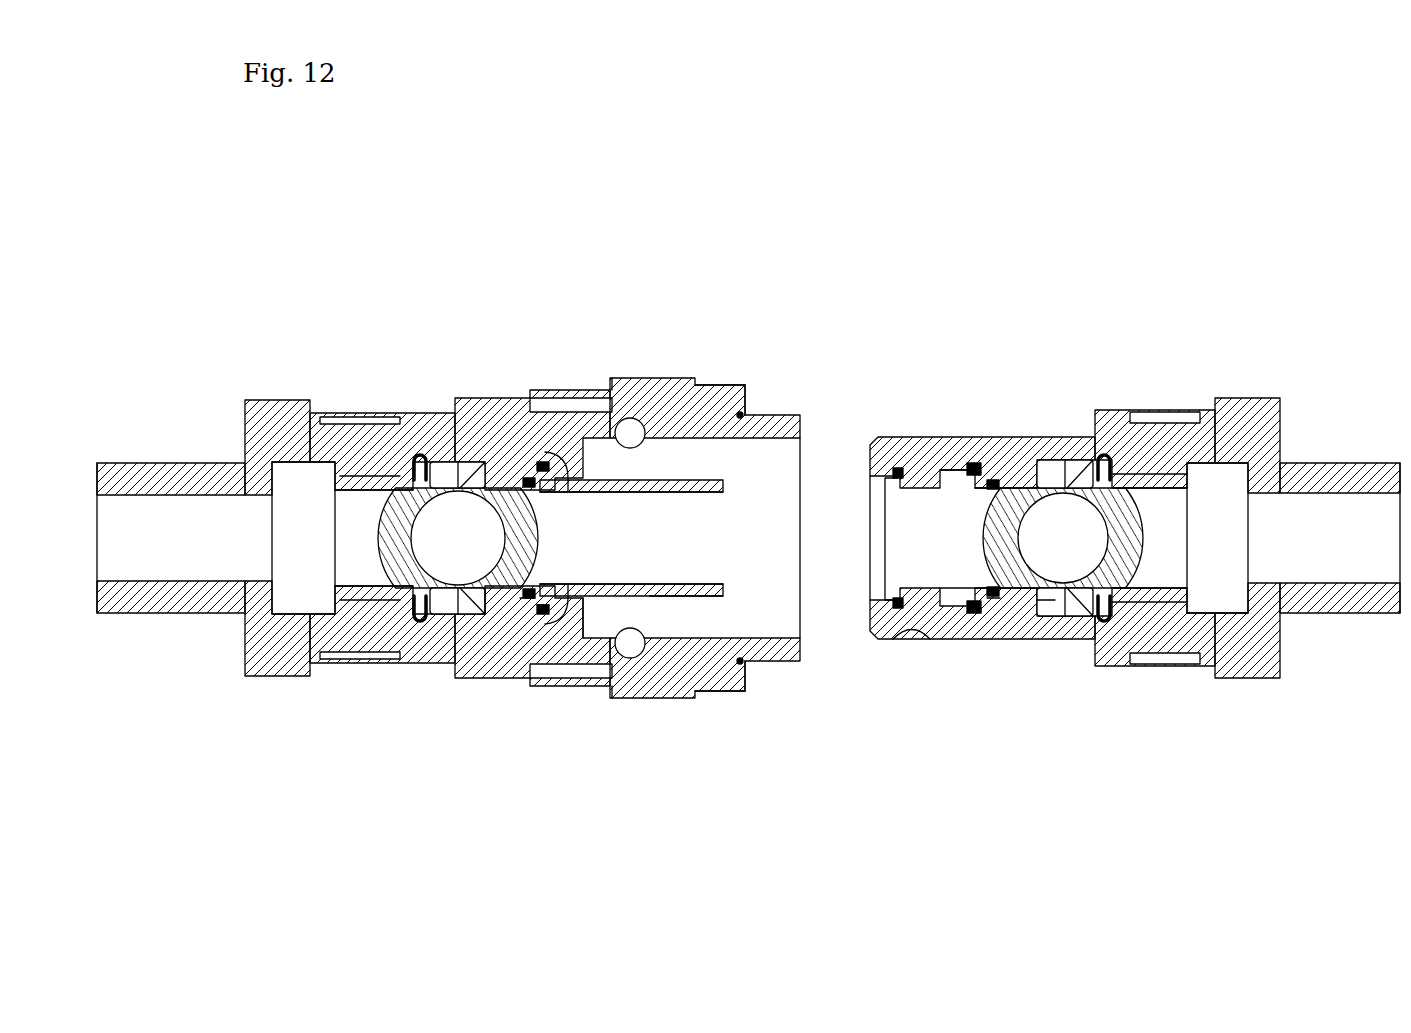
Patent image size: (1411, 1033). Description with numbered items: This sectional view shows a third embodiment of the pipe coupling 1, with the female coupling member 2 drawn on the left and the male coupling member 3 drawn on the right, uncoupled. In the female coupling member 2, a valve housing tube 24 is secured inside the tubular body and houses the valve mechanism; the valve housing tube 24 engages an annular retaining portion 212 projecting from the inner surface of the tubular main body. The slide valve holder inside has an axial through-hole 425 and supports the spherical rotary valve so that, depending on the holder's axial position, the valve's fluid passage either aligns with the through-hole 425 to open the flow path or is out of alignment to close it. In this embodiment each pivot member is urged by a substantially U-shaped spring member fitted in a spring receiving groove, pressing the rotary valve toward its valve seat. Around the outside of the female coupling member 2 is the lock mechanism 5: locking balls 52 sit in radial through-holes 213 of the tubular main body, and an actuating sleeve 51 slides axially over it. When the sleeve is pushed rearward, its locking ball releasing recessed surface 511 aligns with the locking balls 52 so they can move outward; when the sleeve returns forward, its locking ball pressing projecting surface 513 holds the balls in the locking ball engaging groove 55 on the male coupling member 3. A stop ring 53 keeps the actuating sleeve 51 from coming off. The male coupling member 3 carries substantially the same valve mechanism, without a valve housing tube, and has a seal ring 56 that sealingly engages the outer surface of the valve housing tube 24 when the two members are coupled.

The pipe coupling 1 is at (860, 300).
The female coupling member 2 is at (467, 385).
The male coupling member 3 is at (1168, 400).
The lock mechanism 5 is at (748, 382).
The valve housing tube 24 is at (492, 608).
The actuating sleeve 51 is at (760, 392).
The locking balls 52 is at (630, 433).
The stop ring 53 is at (740, 415).
The locking ball engaging groove 55 is at (915, 440).
The seal ring 56 is at (890, 642).
The annular retaining portion 212 is at (575, 405).
The radial through-holes 213 is at (655, 672).
The through-hole 425 is at (612, 556).
The locking ball releasing recessed surface 511 is at (700, 390).
The locking ball pressing projecting surface 513 is at (648, 398).